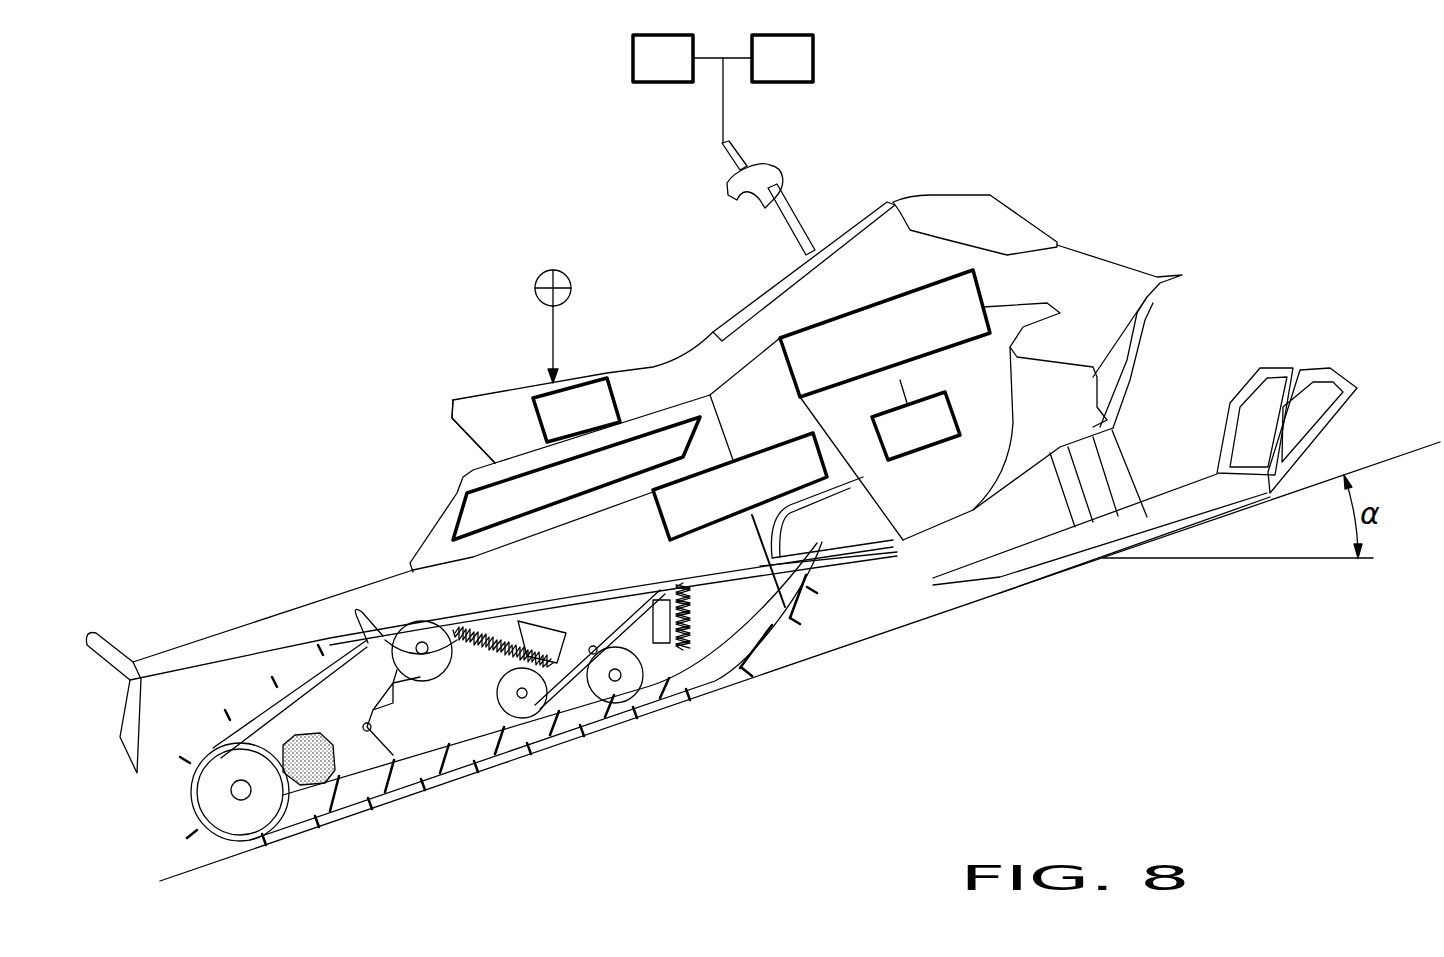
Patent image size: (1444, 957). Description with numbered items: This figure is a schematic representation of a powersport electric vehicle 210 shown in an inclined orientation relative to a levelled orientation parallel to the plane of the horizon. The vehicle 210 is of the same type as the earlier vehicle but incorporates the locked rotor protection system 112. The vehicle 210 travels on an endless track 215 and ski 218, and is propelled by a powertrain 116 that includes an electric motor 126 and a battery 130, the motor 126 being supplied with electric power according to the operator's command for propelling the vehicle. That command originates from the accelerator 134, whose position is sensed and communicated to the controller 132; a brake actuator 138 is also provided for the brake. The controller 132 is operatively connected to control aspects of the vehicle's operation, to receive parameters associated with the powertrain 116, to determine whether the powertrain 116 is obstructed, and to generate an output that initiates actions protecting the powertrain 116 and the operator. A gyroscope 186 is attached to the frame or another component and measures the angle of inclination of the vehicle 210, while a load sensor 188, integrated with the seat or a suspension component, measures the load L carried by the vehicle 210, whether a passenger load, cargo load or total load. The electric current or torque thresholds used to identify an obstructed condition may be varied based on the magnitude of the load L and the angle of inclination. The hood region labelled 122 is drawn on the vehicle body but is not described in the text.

The electric vehicle 210 is at (226, 308).
The brake actuator 138 is at (663, 57).
The accelerator 134 is at (787, 57).
The locked rotor protection system 112 is at (1064, 304).
The ski 218 is at (1275, 370).
The load L is at (535, 289).
The load sensor 188 is at (555, 427).
The hood 122 is at (493, 437).
The battery 130 is at (483, 502).
The electric motor 126 is at (660, 517).
The controller 132 is at (977, 340).
The gyroscope 186 is at (920, 433).
The powertrain 116 is at (883, 572).
The endless track 215 is at (497, 750).